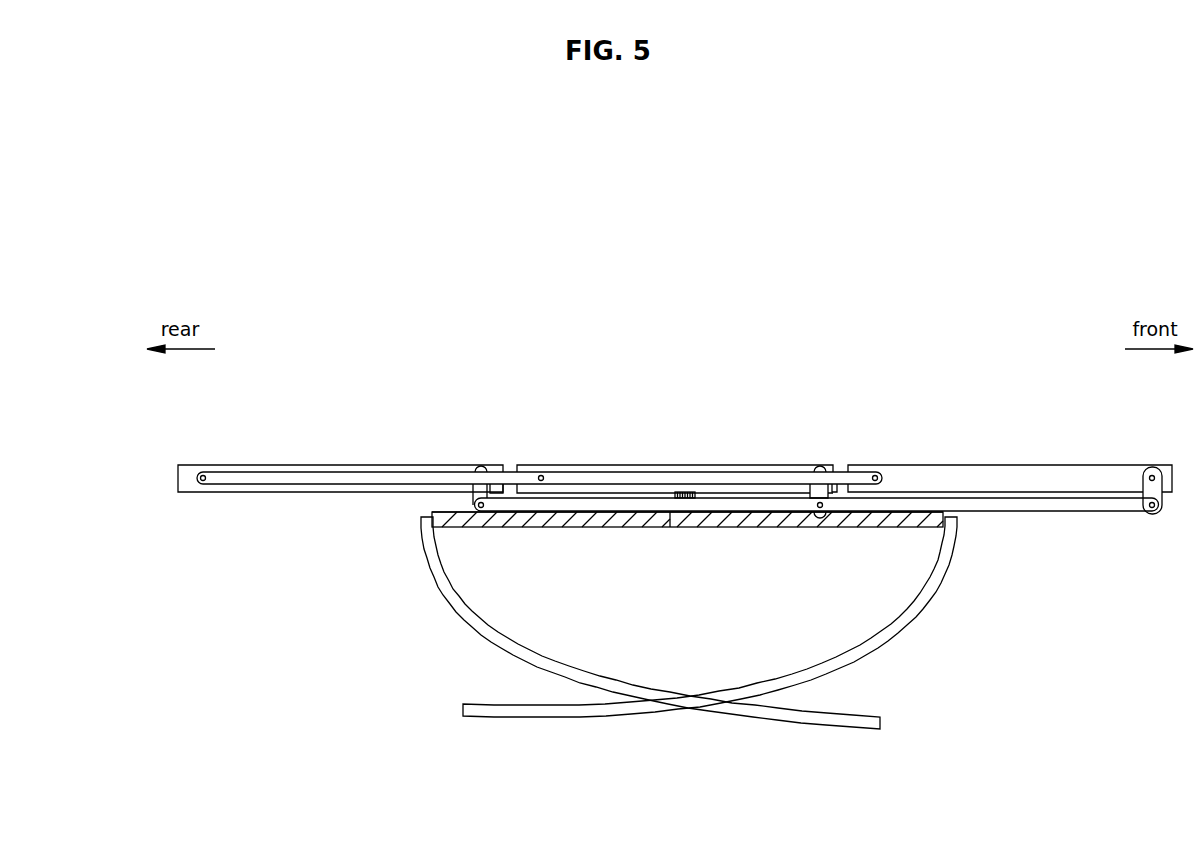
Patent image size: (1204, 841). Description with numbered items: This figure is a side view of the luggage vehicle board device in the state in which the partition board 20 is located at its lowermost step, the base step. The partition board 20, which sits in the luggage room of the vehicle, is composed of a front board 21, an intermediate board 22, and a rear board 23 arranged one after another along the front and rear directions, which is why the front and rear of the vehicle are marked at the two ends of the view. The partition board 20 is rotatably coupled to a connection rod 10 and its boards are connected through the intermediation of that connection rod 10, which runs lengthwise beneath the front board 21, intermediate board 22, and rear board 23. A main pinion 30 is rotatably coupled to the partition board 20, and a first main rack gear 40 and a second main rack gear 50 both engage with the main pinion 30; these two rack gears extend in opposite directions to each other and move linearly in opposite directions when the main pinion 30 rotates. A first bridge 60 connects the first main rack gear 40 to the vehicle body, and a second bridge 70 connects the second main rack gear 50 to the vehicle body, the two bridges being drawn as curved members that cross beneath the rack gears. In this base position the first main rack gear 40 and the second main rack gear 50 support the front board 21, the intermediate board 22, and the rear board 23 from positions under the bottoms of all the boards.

The connection rod 10 is at (256, 482).
The partition board 20 is at (907, 460).
The front board 21 is at (988, 476).
The intermediate board 22 is at (580, 465).
The rear board 23 is at (352, 465).
The main pinion 30 is at (684, 492).
The first main rack gear 40 is at (798, 525).
The second main rack gear 50 is at (548, 527).
The first bridge 60 is at (870, 643).
The second bridge 70 is at (483, 633).